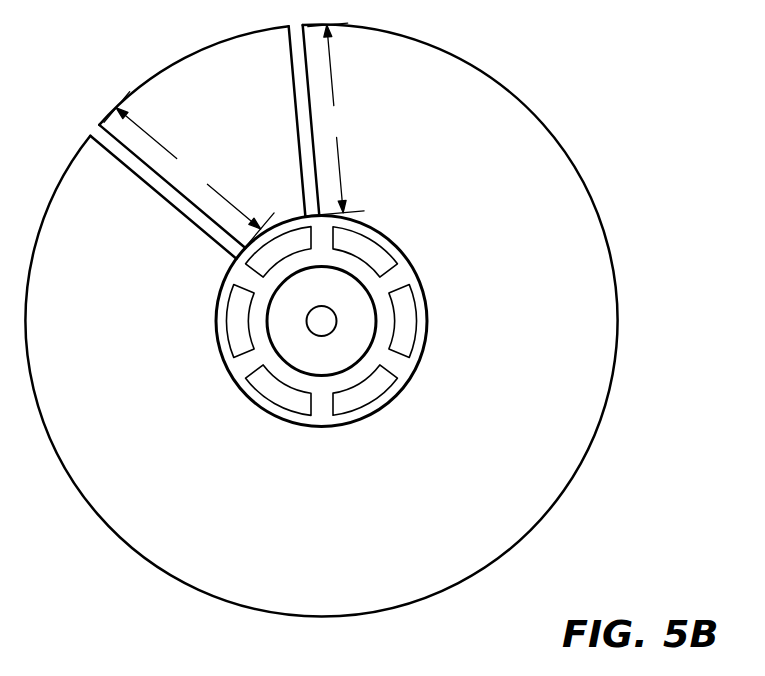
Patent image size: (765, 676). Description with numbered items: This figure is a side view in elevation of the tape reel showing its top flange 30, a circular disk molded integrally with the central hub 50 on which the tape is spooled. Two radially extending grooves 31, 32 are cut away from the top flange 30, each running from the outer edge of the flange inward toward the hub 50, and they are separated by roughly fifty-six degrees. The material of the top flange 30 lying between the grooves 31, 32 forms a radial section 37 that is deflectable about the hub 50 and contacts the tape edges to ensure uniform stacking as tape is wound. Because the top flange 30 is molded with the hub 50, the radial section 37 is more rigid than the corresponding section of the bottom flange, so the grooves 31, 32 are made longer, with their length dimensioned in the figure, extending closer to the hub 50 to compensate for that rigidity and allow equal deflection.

The top flange 30 is at (584, 341).
The radially extending groove 31 is at (293, 59).
The radially extending groove 32 is at (138, 171).
The radial section 37 is at (180, 82).
The hub 50 is at (390, 248).